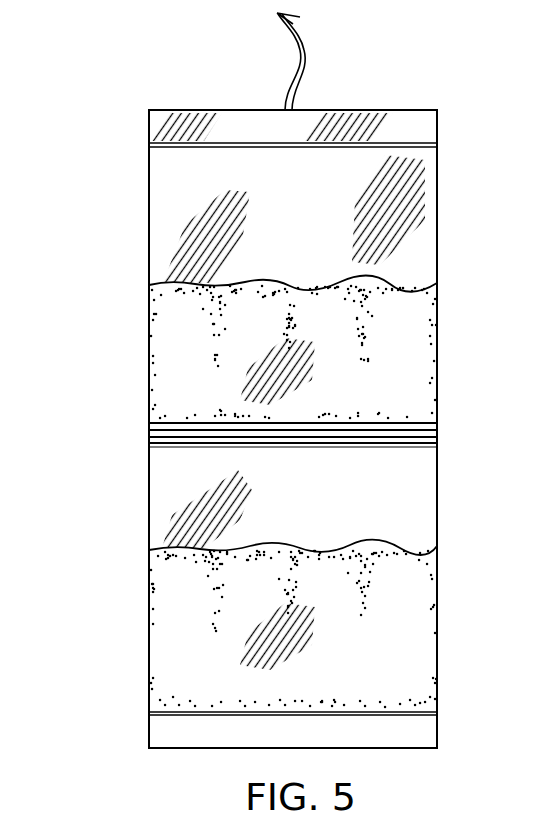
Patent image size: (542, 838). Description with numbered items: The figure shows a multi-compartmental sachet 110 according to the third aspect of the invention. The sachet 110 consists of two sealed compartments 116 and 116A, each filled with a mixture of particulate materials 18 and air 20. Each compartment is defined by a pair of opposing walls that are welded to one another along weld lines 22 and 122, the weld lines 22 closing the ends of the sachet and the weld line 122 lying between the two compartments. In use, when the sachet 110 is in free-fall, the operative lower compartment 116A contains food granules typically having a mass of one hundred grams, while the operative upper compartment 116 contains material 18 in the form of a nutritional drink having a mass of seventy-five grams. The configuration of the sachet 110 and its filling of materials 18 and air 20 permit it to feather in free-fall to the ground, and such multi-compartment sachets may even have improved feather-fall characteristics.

The sachet 110 is at (131, 311).
The weld line 22 is at (437, 146).
The air 20 is at (149, 216).
The sealed compartment 116 is at (437, 261).
The operative lower compartment 116A is at (437, 489).
The particulate materials 18 is at (437, 357).
The weld line 122 is at (149, 433).